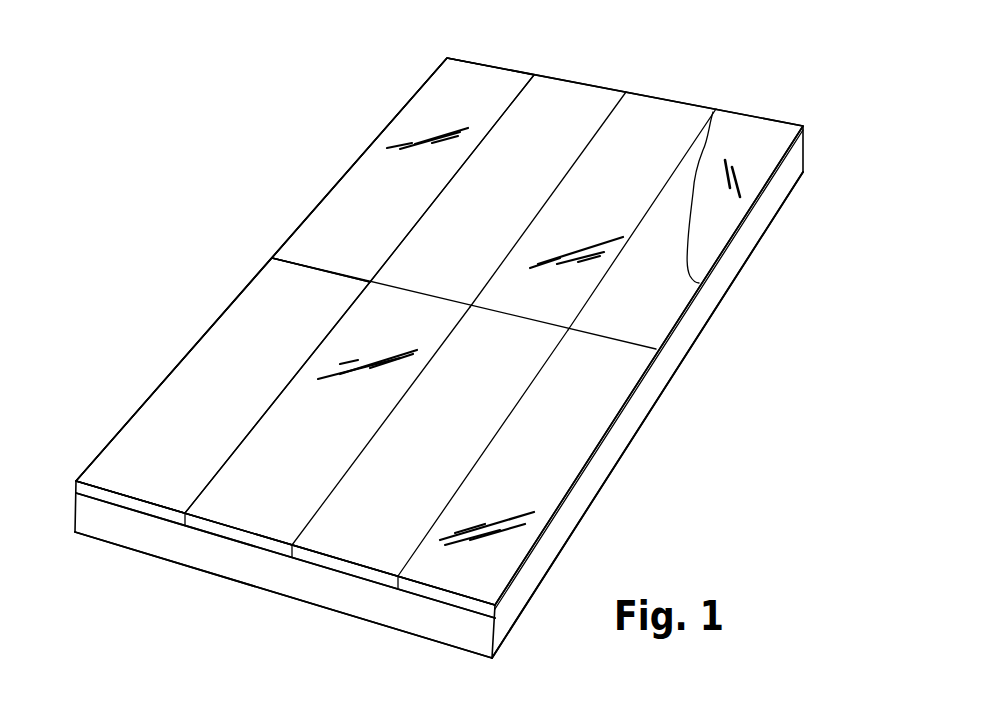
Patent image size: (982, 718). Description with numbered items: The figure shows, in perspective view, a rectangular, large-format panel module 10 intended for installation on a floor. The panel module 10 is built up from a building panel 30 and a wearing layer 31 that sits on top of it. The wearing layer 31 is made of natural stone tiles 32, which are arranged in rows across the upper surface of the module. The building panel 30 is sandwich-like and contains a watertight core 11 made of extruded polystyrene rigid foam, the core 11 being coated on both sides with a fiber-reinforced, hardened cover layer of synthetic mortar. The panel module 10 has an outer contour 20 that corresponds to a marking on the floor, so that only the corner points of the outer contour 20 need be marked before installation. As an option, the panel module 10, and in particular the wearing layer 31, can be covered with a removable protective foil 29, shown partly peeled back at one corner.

The panel module 10 is at (684, 432).
The watertight core 11 is at (400, 607).
The outer contour 20 is at (213, 325).
The removable protective foil 29 is at (752, 158).
The building panel 30 is at (193, 569).
The wearing layer 31 is at (155, 429).
The natural stone tiles 32 is at (357, 204).